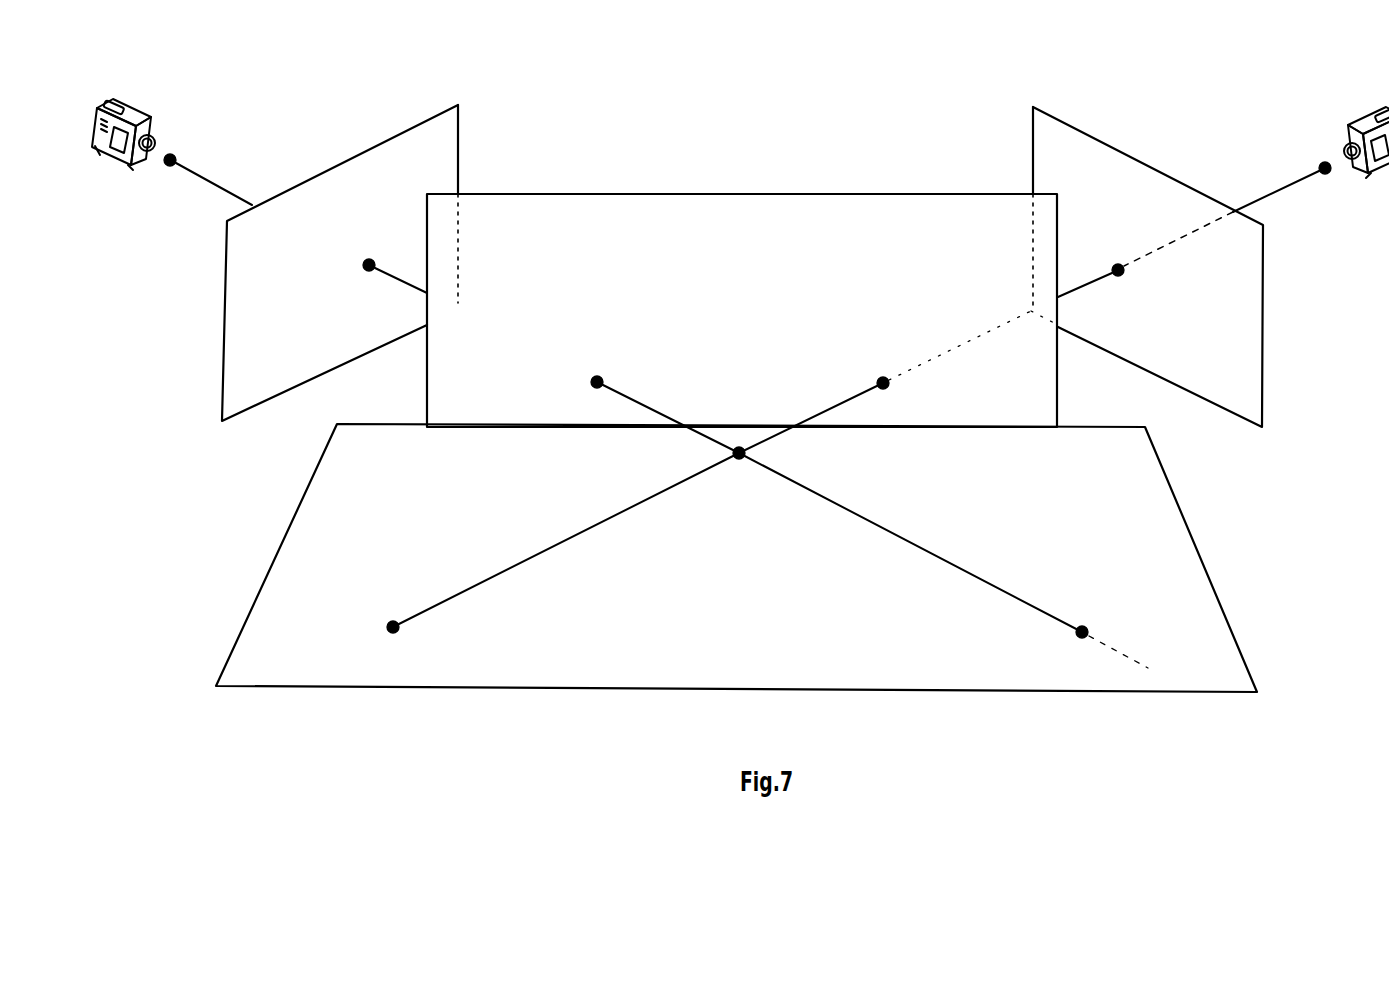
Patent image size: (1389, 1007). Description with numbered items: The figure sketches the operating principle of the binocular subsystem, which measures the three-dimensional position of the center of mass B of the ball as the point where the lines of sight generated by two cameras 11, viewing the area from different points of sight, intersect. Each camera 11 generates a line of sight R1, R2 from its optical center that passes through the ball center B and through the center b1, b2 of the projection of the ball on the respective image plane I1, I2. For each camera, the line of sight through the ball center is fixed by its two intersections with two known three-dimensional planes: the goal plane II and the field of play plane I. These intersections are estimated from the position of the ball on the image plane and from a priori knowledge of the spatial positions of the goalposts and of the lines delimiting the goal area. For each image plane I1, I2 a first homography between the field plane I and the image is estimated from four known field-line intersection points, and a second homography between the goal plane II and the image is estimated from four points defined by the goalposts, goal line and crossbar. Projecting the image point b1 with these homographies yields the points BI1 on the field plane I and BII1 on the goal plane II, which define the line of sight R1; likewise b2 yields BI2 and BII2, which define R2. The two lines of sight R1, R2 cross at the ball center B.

The camera 11 is at (132, 110).
The line of sight of the first camera R1 is at (208, 179).
The line of sight of the second camera R2 is at (1227, 214).
The image plane of the first camera I1 is at (340, 263).
The image plane of the second camera I2 is at (1148, 267).
The goal plane II is at (742, 310).
The field of play plane I is at (736, 558).
The center of the ball projection on the first image plane b1 is at (390, 286).
The center of the ball projection on the second image plane b2 is at (1010, 322).
The center of mass of the ball B is at (739, 472).
The projection of the ball center onto the goal plane from the first camera BII1 is at (665, 397).
The projection of the ball center onto the goal plane from the second camera BII2 is at (820, 397).
The projection of the ball center onto the field plane from the first camera BI1 is at (943, 566).
The projection of the ball center onto the field plane from the second camera BI2 is at (563, 565).